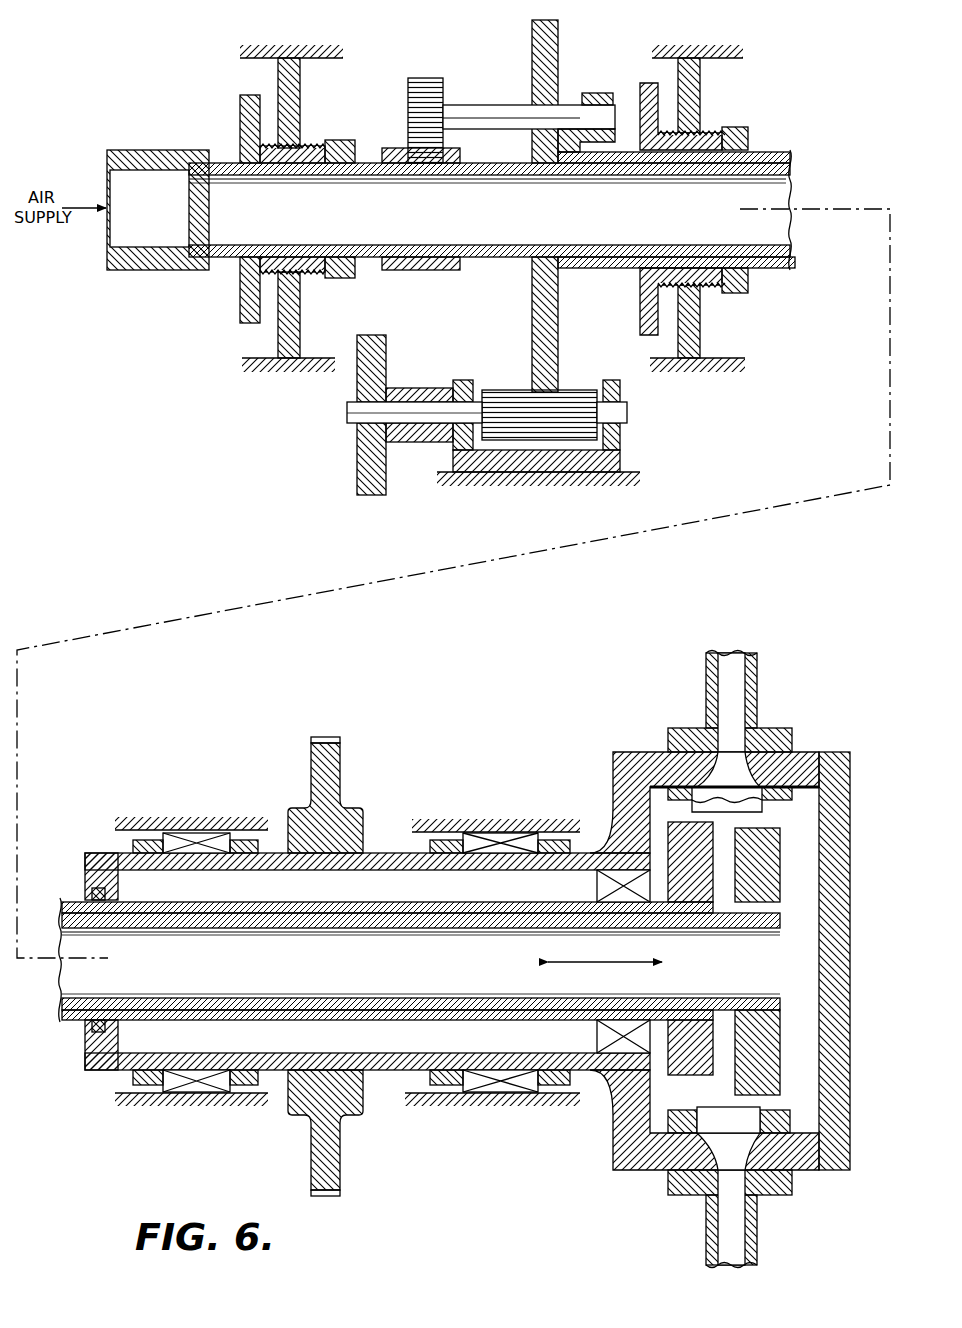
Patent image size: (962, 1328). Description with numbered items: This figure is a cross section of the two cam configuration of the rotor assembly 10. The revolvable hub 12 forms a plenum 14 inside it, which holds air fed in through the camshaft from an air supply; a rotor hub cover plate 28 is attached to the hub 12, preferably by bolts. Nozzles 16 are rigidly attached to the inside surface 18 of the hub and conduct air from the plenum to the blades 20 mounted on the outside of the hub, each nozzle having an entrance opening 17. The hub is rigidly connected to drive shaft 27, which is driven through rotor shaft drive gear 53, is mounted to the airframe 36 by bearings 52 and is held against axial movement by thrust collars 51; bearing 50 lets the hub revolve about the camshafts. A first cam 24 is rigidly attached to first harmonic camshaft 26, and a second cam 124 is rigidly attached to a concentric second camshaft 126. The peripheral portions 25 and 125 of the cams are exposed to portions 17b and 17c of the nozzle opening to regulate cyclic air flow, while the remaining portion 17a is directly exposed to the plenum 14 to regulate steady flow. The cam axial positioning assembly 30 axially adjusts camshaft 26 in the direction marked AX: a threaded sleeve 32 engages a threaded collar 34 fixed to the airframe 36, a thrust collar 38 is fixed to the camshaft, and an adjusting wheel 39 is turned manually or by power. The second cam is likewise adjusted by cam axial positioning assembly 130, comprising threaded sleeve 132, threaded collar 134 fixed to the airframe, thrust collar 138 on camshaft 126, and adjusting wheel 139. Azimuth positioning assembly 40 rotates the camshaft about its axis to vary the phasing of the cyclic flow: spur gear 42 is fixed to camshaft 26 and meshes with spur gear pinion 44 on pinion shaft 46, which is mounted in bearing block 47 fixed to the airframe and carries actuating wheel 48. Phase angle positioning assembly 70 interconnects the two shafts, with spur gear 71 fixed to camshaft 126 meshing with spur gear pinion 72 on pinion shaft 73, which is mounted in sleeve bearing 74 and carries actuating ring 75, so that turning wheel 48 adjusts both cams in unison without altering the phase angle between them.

The rotor assembly 10 is at (422, 757).
The revolvable hub 12 is at (725, 946).
The plenum 14 is at (810, 867).
The nozzle 16 is at (774, 1114).
The nozzle entrance opening 17 is at (706, 1107).
The steady flow portion of nozzle entrance opening 17a is at (725, 797).
The cyclic flow portion of nozzle entrance opening 17b is at (700, 788).
The cyclic flow portion of nozzle entrance opening 17c is at (750, 797).
The inside surface of hub 18 is at (803, 1131).
The blade 20 is at (707, 672).
The first cam 24 is at (701, 1060).
The edge portion of cam 25 is at (688, 822).
The first harmonic camshaft 26 is at (790, 152).
The drive shaft 27 is at (391, 1072).
The rotor hub cover plate 28 is at (846, 848).
The cam axial positioning assembly 30 is at (760, 70).
The threaded sleeve 32 is at (710, 130).
The threaded collar 34 is at (700, 77).
The airframe 36 is at (340, 58).
The thrust collar 38 is at (750, 137).
The adjusting wheel 39 is at (640, 320).
The azimuth positioning assembly 40 is at (490, 362).
The spur gear 42 is at (558, 318).
The spur gear pinion 44 is at (577, 392).
The pinion shaft 46 is at (628, 412).
The bearing block 47 is at (620, 455).
The actuating wheel 48 is at (357, 466).
The bearing 50 is at (598, 890).
The thrust collar 51 is at (135, 846).
The bearing 52 is at (197, 833).
The rotor shaft drive gear 53 is at (341, 779).
The phase angle positioning assembly 70 is at (498, 56).
The spur gear 71 is at (395, 148).
The spur gear pinion 72 is at (426, 78).
The pinion shaft 73 is at (491, 106).
The sleeve bearing 74 is at (578, 100).
The actuating ring 75 is at (604, 93).
The second cam 124 is at (775, 1060).
The peripheral portion of second cam 125 is at (767, 822).
The second camshaft 126 is at (793, 185).
The cam axial positioning assembly 130 is at (360, 74).
The threaded sleeve 132 is at (305, 145).
The threaded collar 134 is at (280, 74).
The thrust collar 138 is at (348, 140).
The adjusting wheel 139 is at (241, 110).